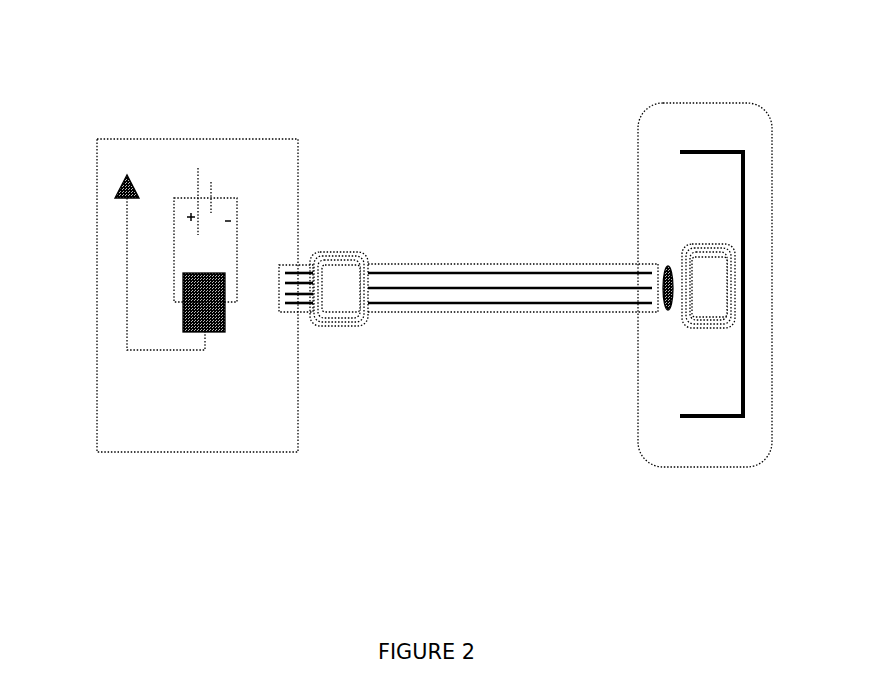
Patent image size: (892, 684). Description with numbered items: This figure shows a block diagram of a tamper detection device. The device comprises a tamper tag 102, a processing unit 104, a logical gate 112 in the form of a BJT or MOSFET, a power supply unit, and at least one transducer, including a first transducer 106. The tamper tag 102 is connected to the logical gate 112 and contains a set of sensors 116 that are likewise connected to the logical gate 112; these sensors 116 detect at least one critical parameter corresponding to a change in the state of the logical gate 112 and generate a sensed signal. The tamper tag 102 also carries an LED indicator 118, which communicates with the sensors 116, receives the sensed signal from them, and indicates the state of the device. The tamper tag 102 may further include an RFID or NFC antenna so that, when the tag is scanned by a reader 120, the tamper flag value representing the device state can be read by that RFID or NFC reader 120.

The tamper tag 102 is at (711, 420).
The processing unit 104 is at (222, 338).
The first transducer 106 is at (426, 254).
The logical gate 112 is at (532, 297).
The sensor 116 is at (127, 167).
The LED indicator 118 is at (665, 262).
The reader 120 is at (683, 328).